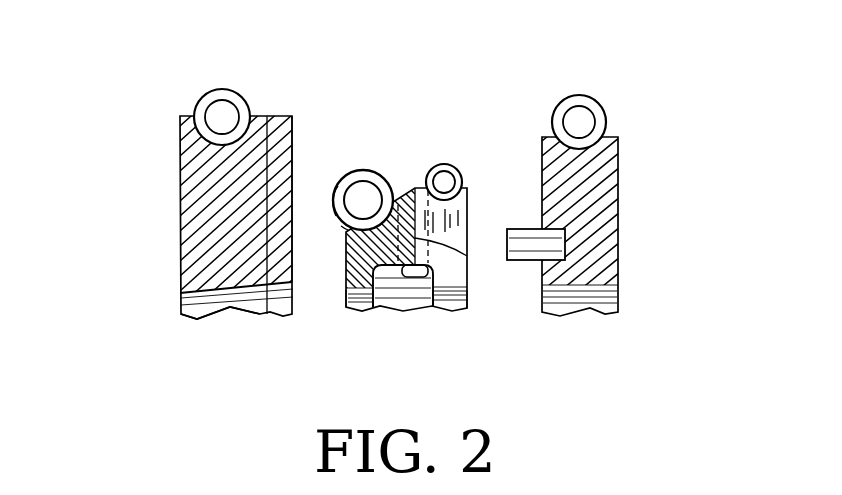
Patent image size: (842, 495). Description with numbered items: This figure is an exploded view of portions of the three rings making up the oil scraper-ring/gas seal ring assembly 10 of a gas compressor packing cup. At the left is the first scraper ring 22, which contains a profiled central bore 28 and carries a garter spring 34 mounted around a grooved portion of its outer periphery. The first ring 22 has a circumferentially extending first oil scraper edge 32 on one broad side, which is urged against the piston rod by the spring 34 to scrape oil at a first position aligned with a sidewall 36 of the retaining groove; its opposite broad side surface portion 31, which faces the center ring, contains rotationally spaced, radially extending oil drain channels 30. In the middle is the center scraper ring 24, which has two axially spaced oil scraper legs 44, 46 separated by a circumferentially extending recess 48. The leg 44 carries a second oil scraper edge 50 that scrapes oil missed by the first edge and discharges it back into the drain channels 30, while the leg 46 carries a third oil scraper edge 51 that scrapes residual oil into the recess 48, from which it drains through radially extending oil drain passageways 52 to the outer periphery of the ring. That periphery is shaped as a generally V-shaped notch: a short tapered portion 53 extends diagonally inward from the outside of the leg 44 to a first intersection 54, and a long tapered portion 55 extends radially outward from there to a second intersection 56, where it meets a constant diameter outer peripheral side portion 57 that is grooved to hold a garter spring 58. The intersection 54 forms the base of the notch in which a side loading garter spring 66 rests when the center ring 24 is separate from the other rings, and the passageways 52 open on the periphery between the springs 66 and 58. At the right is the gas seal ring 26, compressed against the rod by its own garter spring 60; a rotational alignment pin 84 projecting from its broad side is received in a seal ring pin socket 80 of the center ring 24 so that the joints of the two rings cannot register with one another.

The oil scraper-ring/gas seal ring assembly 10 is at (482, 64).
The first scraper ring 22 is at (170, 180).
The center scraper ring 24 is at (482, 207).
The gas seal ring 26 is at (636, 177).
The profiled central bore 28 is at (266, 317).
The oil drain channels 30 is at (296, 142).
The broad side surface portion 31 is at (293, 135).
The first oil scraper edge 32 is at (180, 293).
The garter spring 34 is at (238, 89).
The groove sidewall 36 is at (269, 116).
The oil scraper leg 44 is at (359, 306).
The oil scraper leg 46 is at (468, 305).
The recess 48 is at (393, 306).
The second oil scraper edge 50 is at (339, 306).
The third oil scraper edge 51 is at (434, 306).
The oil drain passageways 52 is at (416, 280).
The short tapered portion 53 is at (340, 216).
The first intersection 54 is at (375, 170).
The long tapered portion 55 is at (399, 202).
The second intersection 56 is at (428, 190).
The outer peripheral side portion 57 is at (466, 194).
The garter spring 58 is at (450, 164).
The garter spring 60 is at (606, 96).
The side loading garter spring 66 is at (334, 223).
The seal ring pin socket 80 is at (467, 256).
The rotational alignment pin 84 is at (567, 244).